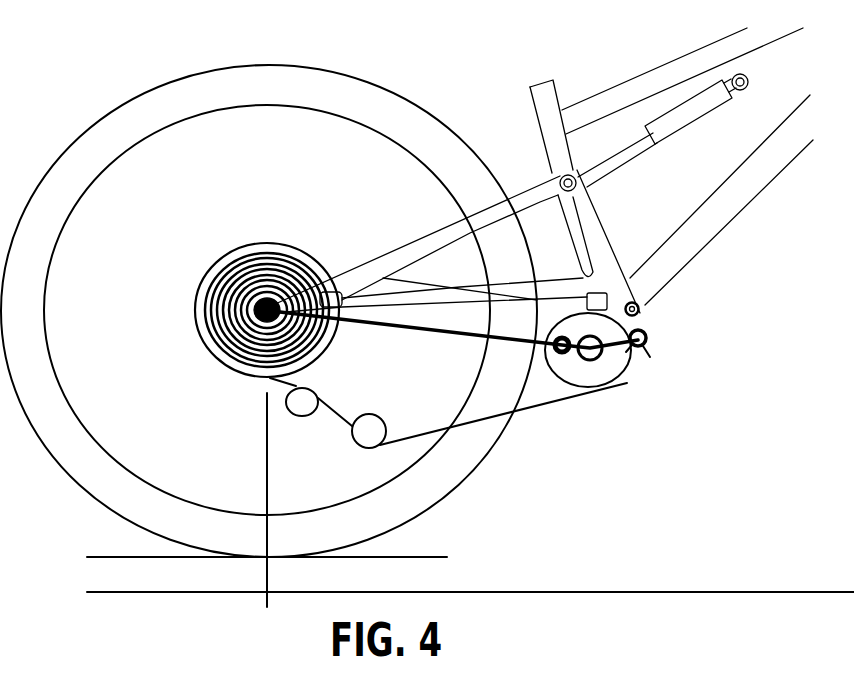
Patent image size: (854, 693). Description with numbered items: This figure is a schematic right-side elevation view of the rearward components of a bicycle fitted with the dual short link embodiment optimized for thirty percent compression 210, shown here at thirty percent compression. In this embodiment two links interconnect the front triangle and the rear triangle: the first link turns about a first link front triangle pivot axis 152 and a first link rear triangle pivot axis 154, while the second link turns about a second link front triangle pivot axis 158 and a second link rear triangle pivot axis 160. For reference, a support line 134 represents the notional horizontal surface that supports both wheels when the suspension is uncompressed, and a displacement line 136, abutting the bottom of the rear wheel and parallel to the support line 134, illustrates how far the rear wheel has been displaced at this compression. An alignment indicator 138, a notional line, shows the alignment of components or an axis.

The support line 134 is at (627, 592).
The displacement line 136 is at (423, 557).
The alignment indicator 138 is at (456, 402).
The first link front triangle pivot axis 152 is at (623, 382).
The first link rear triangle pivot axis 154 is at (650, 338).
The second link front triangle pivot axis 158 is at (560, 362).
The second link rear triangle pivot axis 160 is at (640, 310).
The dual short link embodiment optimized for 30% compression 210 is at (454, 92).